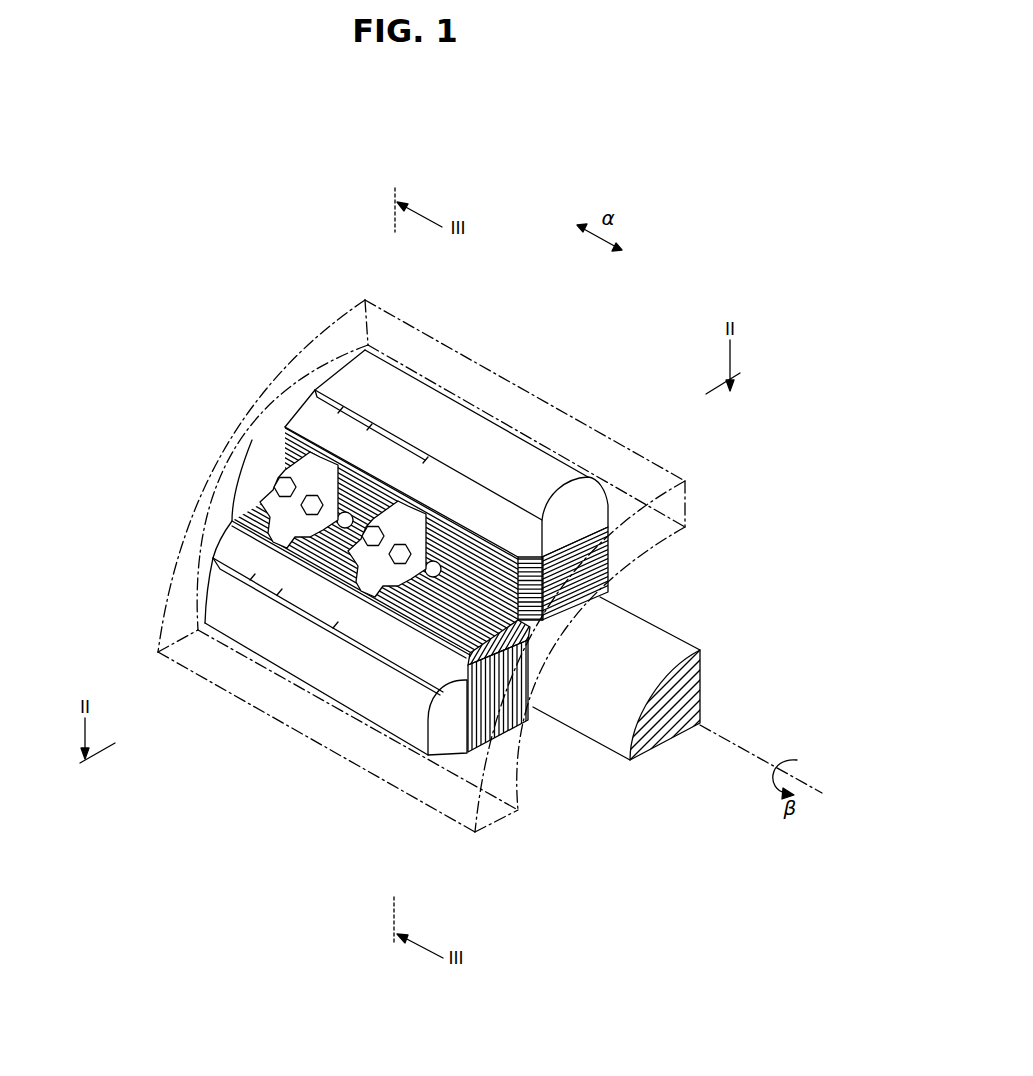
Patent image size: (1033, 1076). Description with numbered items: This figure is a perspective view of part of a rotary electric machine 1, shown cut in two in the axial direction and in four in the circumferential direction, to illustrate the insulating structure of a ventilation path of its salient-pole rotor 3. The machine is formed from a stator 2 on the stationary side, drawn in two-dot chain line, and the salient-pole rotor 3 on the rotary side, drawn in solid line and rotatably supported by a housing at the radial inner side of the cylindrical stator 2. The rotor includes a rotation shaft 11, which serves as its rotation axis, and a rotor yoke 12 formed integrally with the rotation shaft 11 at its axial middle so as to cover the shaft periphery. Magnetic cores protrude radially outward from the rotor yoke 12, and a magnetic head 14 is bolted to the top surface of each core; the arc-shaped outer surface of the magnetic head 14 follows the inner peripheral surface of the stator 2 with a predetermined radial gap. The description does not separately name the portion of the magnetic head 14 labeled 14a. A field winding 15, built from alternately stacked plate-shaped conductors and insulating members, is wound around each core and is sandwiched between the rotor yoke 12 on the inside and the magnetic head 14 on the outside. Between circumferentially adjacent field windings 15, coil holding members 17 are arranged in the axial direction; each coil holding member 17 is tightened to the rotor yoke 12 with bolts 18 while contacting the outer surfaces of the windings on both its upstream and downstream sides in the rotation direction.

The rotary electric machine 1 is at (549, 346).
The stator 2 is at (172, 563).
The salient-pole rotor 3 is at (671, 717).
The rotation shaft 11 is at (670, 738).
The rotor yoke 12 is at (520, 630).
The magnetic head 14 is at (397, 384).
The end plate flange 14a is at (383, 429).
The field winding 15 is at (607, 562).
The coil holding member 17 is at (288, 468).
The bolt 18 is at (276, 487).